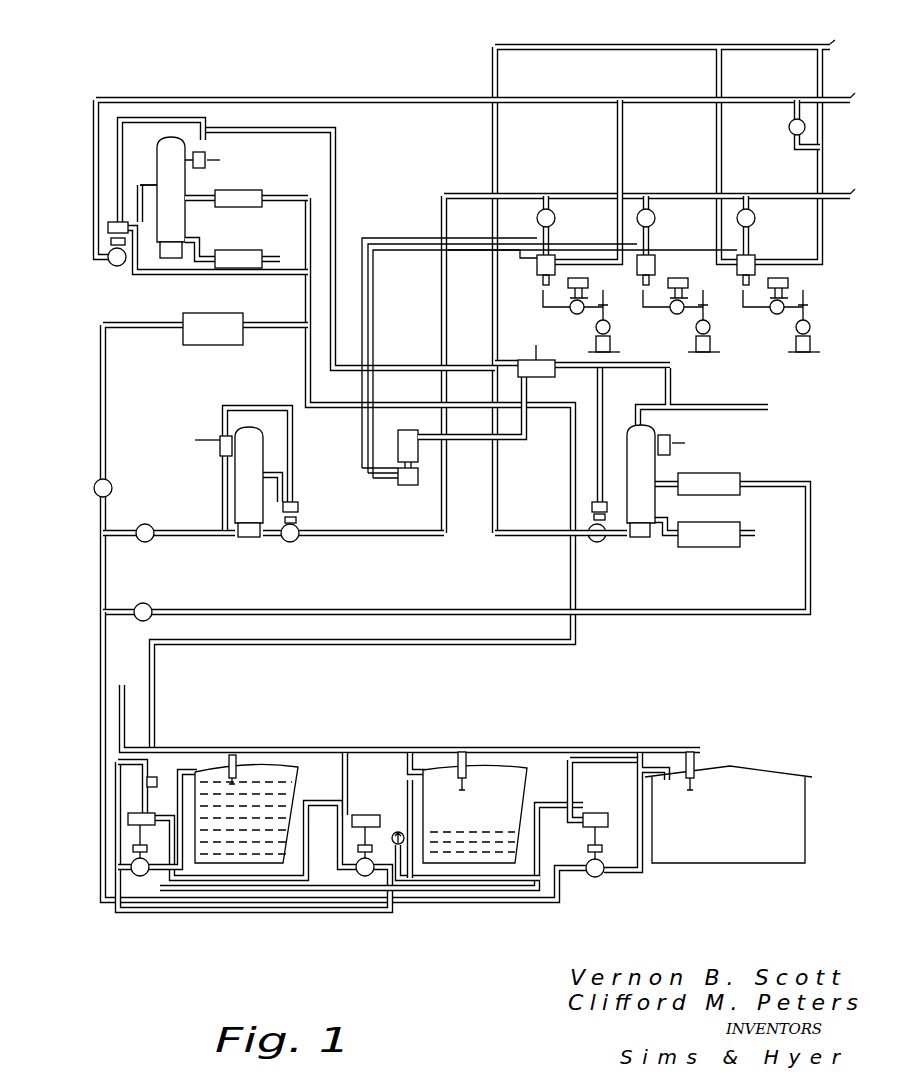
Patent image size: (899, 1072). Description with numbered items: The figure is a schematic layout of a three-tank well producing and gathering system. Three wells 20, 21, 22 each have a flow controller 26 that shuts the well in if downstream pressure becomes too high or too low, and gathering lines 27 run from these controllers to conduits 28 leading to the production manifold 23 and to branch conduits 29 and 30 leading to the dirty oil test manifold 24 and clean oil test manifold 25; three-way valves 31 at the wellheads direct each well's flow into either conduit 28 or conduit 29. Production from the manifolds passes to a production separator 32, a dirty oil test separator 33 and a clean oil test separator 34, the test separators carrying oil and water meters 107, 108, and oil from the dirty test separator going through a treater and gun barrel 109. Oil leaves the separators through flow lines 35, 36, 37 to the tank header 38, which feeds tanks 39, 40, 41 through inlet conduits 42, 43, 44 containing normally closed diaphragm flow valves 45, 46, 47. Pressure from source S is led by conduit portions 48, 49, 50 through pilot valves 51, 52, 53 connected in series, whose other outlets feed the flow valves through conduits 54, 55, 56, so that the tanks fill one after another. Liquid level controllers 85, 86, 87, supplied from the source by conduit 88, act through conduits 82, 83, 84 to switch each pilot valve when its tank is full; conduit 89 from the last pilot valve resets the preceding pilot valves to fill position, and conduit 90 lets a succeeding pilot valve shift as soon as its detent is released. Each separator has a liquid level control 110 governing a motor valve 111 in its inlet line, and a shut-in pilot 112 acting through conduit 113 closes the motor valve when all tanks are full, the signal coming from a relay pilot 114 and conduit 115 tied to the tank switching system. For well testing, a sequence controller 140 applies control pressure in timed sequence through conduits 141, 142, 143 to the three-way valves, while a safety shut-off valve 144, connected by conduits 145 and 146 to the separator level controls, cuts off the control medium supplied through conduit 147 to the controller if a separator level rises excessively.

The well 20 is at (596, 345).
The well 21 is at (712, 342).
The well 22 is at (812, 345).
The production manifold 23 is at (446, 196).
The dirty oil test manifold 24 is at (545, 100).
The clean oil test manifold 25 is at (556, 45).
The flow controller 26 is at (570, 312).
The gathering line 27 is at (540, 300).
The conduit 28 is at (557, 226).
The branch conduit 29 is at (622, 138).
The branch conduit 30 is at (788, 128).
The three-way valve 31 is at (535, 265).
The production separator 32 is at (235, 480).
The dirty oil test separator 33 is at (185, 180).
The clean oil test separator 34 is at (655, 470).
The flow line 35 is at (170, 530).
The flow line 36 is at (108, 385).
The flow line 37 is at (375, 610).
The tank header 38 is at (108, 575).
The tank 39 is at (265, 765).
The tank 40 is at (495, 770).
The tank 41 is at (750, 768).
The inlet conduit 42 is at (190, 770).
The inlet conduit 43 is at (410, 752).
The inlet conduit 44 is at (641, 752).
The flow valve 45 is at (140, 878).
The flow valve 46 is at (368, 878).
The flow valve 47 is at (590, 878).
The conduit portion 48 is at (118, 745).
The conduit 49 is at (250, 892).
The conduit 50 is at (470, 902).
The pilot valve 51 is at (122, 764).
The pilot valve 52 is at (365, 814).
The pilot valve 53 is at (595, 812).
The conduit 54 is at (133, 848).
The conduit 55 is at (358, 848).
The conduit 56 is at (588, 848).
The conduit 82 is at (128, 818).
The conduit 83 is at (343, 782).
The conduit 84 is at (568, 782).
The liquid level controller 85 is at (232, 754).
The liquid level controller 86 is at (462, 752).
The liquid level controller 87 is at (690, 752).
The conduit 88 is at (310, 748).
The conduit 89 is at (398, 831).
The conduit 90 is at (304, 912).
The oil meter 107 is at (262, 192).
The water meter 108 is at (256, 250).
The treater and gun barrel 109 is at (200, 313).
The liquid level control 110 is at (207, 158).
The motor valve 111 is at (120, 267).
The shut-in pilot 112 is at (96, 255).
The conduit 113 is at (157, 120).
The relay pilot 114 is at (155, 777).
The conduit 115 is at (140, 222).
The sequence controller 140 is at (405, 487).
The control pressure conduit 141 is at (375, 335).
The control pressure conduit 142 is at (370, 312).
The control pressure conduit 143 is at (365, 290).
The safety shut-off valve 144 is at (516, 362).
The conduit 145 is at (598, 375).
The conduit 146 is at (336, 202).
The conduit 147 is at (470, 441).